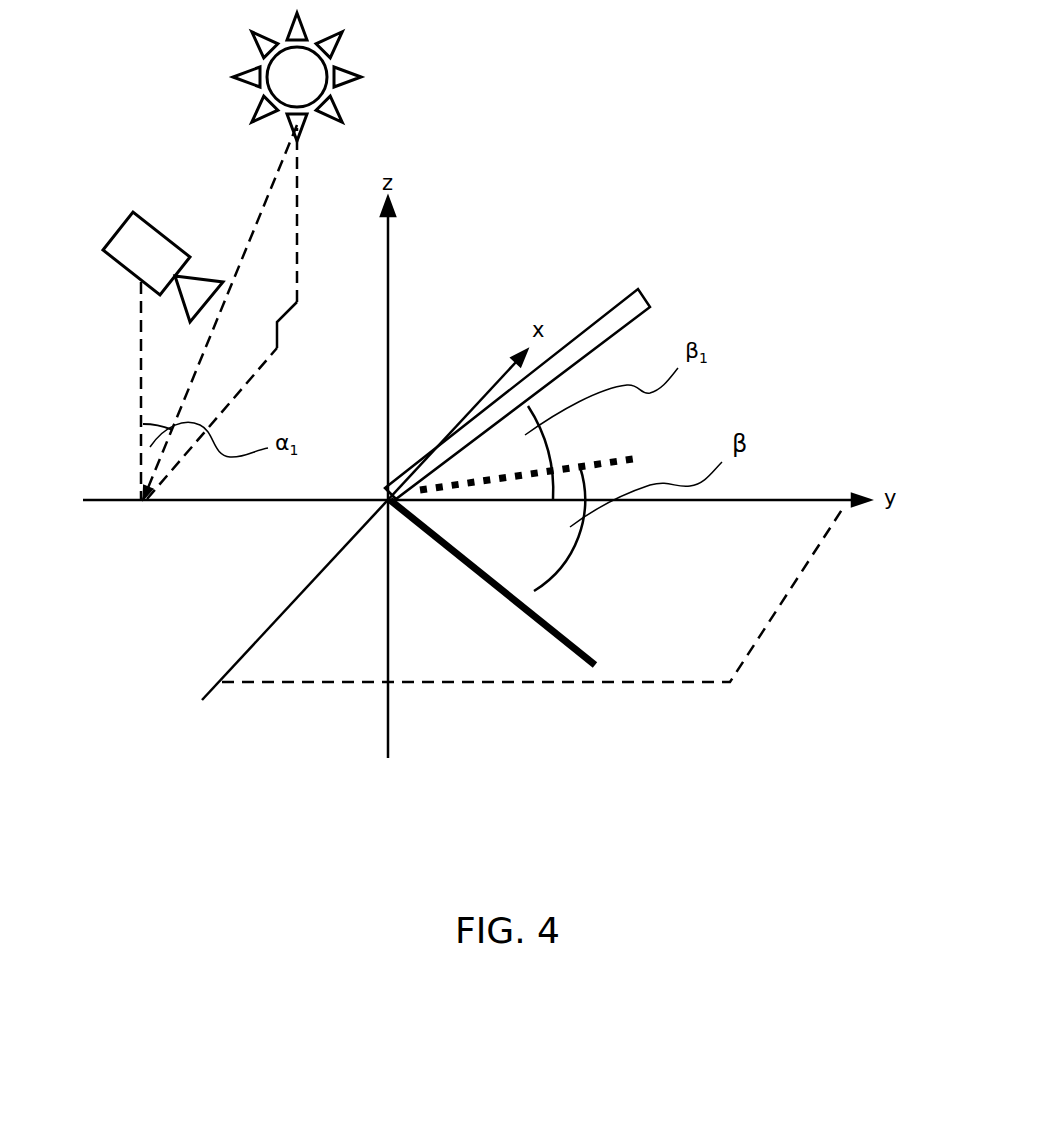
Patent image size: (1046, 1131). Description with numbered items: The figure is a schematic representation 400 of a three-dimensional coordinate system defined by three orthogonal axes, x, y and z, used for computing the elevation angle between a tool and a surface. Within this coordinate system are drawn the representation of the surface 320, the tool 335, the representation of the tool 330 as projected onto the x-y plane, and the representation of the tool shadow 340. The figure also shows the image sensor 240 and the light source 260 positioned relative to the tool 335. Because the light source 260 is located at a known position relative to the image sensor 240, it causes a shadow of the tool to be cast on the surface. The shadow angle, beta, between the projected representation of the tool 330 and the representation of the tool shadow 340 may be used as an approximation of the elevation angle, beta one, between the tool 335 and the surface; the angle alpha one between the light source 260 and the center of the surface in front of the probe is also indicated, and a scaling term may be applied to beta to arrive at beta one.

The image sensor 240 is at (118, 232).
The light source 260 is at (327, 63).
The representation of the surface 320 is at (788, 592).
The representation of the tool projected onto the x-y plane 330 is at (632, 452).
The tool 335 is at (643, 287).
The representation of the tool shadow 340 is at (553, 627).
The schematic representation 400 is at (150, 774).